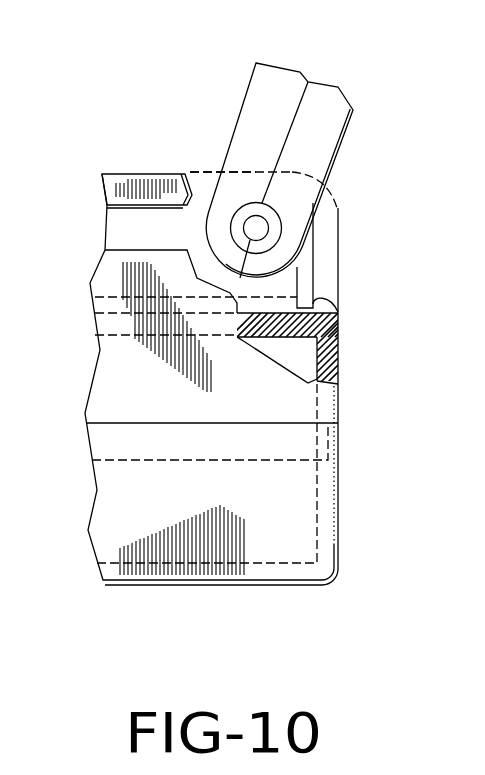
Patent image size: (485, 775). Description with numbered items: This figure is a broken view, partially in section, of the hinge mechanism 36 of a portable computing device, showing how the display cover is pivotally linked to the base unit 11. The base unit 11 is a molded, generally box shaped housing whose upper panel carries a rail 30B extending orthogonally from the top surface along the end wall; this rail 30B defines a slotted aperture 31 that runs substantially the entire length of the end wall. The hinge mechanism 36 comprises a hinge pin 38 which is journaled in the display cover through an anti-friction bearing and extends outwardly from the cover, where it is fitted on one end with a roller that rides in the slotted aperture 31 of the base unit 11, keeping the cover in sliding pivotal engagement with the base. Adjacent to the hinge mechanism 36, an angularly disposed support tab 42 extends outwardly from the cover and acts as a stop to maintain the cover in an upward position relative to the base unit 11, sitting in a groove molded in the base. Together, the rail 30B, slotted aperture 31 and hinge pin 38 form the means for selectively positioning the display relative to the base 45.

The base unit 11 is at (108, 542).
The rail 30B is at (137, 187).
The slotted aperture 31 is at (140, 237).
The hinge mechanism 36 is at (340, 185).
The hinge pin 38 is at (262, 232).
The support tab 42 is at (310, 280).
The means for selectively positioning the display relative to the base 45 is at (199, 146).